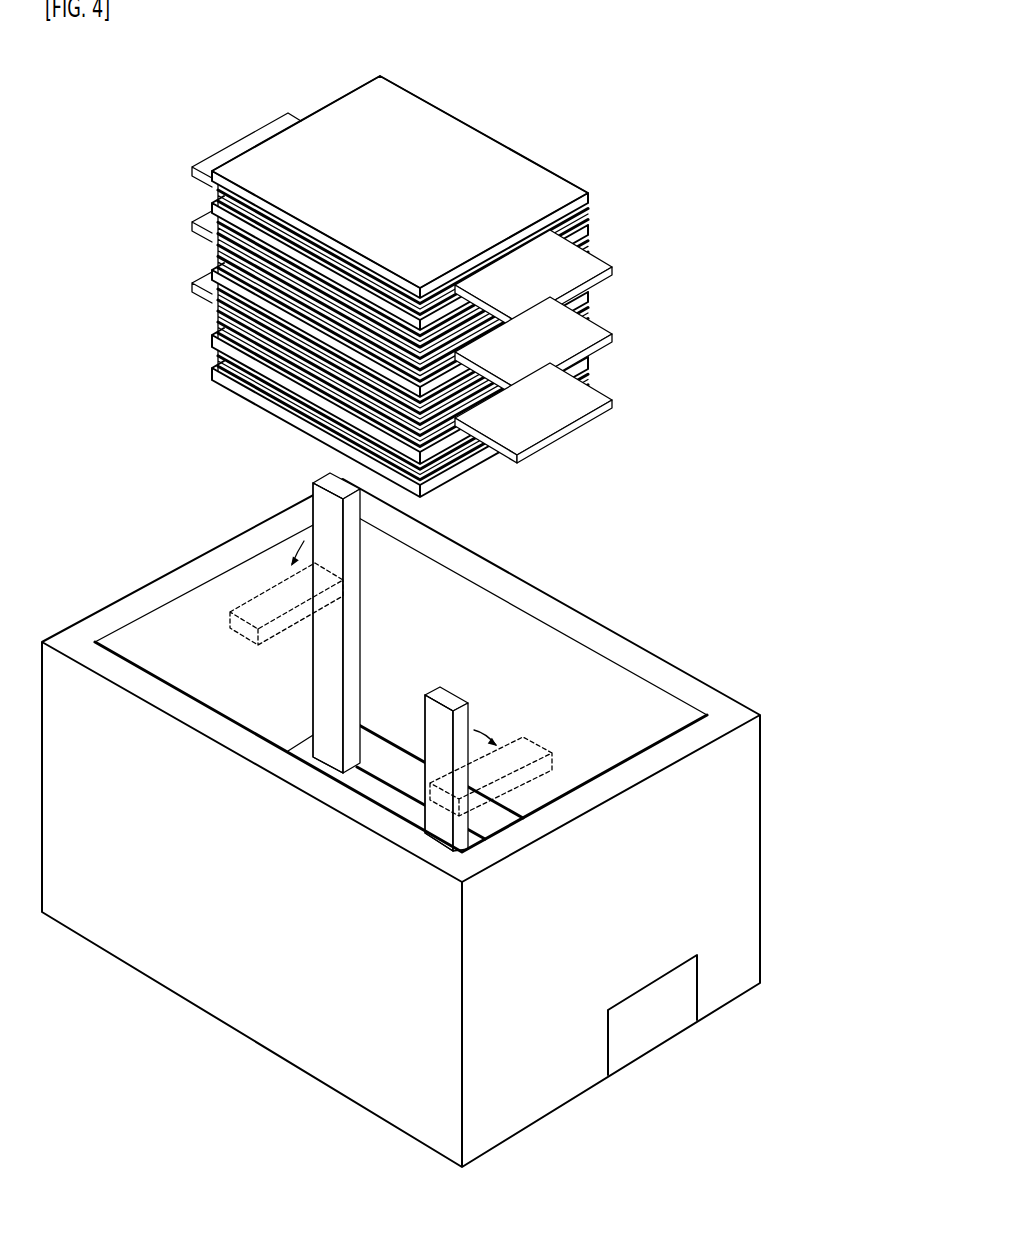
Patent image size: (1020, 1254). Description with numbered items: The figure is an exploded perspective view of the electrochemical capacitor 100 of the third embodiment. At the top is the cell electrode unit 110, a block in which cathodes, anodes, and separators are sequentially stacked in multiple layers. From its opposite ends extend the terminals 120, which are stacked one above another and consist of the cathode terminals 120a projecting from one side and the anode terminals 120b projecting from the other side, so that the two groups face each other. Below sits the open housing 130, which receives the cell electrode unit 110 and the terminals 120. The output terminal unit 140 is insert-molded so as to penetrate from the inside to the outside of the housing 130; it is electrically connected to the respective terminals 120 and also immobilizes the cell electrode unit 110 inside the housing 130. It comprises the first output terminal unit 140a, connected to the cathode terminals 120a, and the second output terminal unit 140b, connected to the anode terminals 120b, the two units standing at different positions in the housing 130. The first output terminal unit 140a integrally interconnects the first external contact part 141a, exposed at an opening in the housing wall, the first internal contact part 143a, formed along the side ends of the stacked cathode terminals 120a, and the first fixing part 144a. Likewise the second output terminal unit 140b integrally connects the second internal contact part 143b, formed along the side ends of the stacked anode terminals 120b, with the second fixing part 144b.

The electrochemical capacitor 100 is at (92, 62).
The cell electrode unit 110 is at (481, 277).
The terminals 120 is at (481, 286).
The cathode terminals 120a is at (288, 120).
The anode terminals 120b is at (580, 256).
The housing 130 is at (441, 819).
The output terminal unit 140 is at (523, 726).
The first output terminal unit 140a is at (401, 622).
The second output terminal unit 140b is at (633, 762).
The first external contact part 141a is at (647, 1037).
The first internal contact part 143a is at (322, 703).
The second internal contact part 143b is at (448, 822).
The first fixing part 144a is at (363, 551).
The second fixing part 144b is at (448, 743).